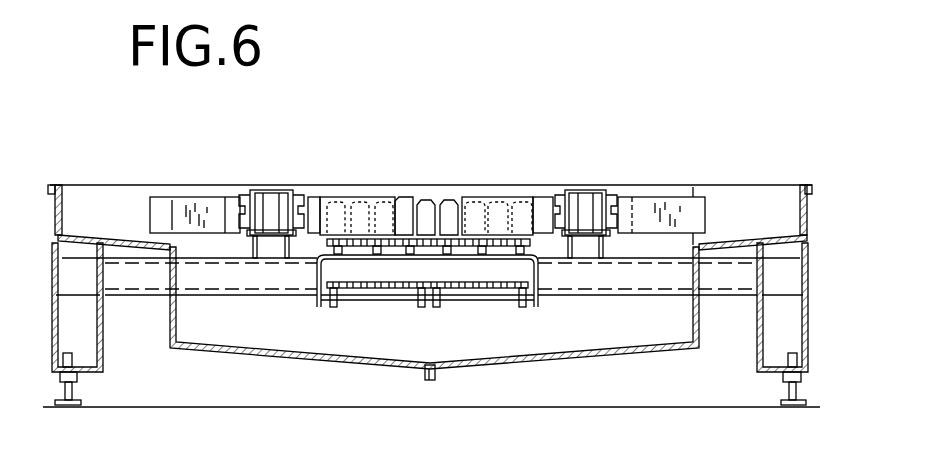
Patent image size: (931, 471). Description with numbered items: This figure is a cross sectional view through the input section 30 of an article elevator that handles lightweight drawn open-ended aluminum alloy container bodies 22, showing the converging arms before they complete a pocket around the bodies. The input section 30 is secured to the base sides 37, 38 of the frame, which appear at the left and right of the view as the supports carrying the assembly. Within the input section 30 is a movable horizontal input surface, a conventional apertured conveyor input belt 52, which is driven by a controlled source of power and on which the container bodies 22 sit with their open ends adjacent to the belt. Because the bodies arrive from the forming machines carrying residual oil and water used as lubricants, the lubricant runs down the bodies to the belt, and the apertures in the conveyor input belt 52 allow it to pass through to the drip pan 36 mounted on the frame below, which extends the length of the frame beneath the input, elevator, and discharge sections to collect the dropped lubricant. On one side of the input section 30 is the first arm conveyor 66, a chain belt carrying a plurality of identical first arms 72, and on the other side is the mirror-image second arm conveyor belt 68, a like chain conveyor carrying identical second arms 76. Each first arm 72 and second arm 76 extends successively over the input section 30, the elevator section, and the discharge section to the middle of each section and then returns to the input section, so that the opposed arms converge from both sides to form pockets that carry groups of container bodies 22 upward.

The container bodies 22 is at (423, 197).
The input section 30 is at (666, 180).
The drip pan 36 is at (568, 370).
The base side 37 is at (52, 333).
The base side 38 is at (808, 310).
The conveyor input belt 52 is at (495, 246).
The first arm conveyor 66 is at (272, 205).
The second arm conveyor belt 68 is at (590, 205).
The first arms 72 is at (355, 197).
The second arms 76 is at (509, 197).